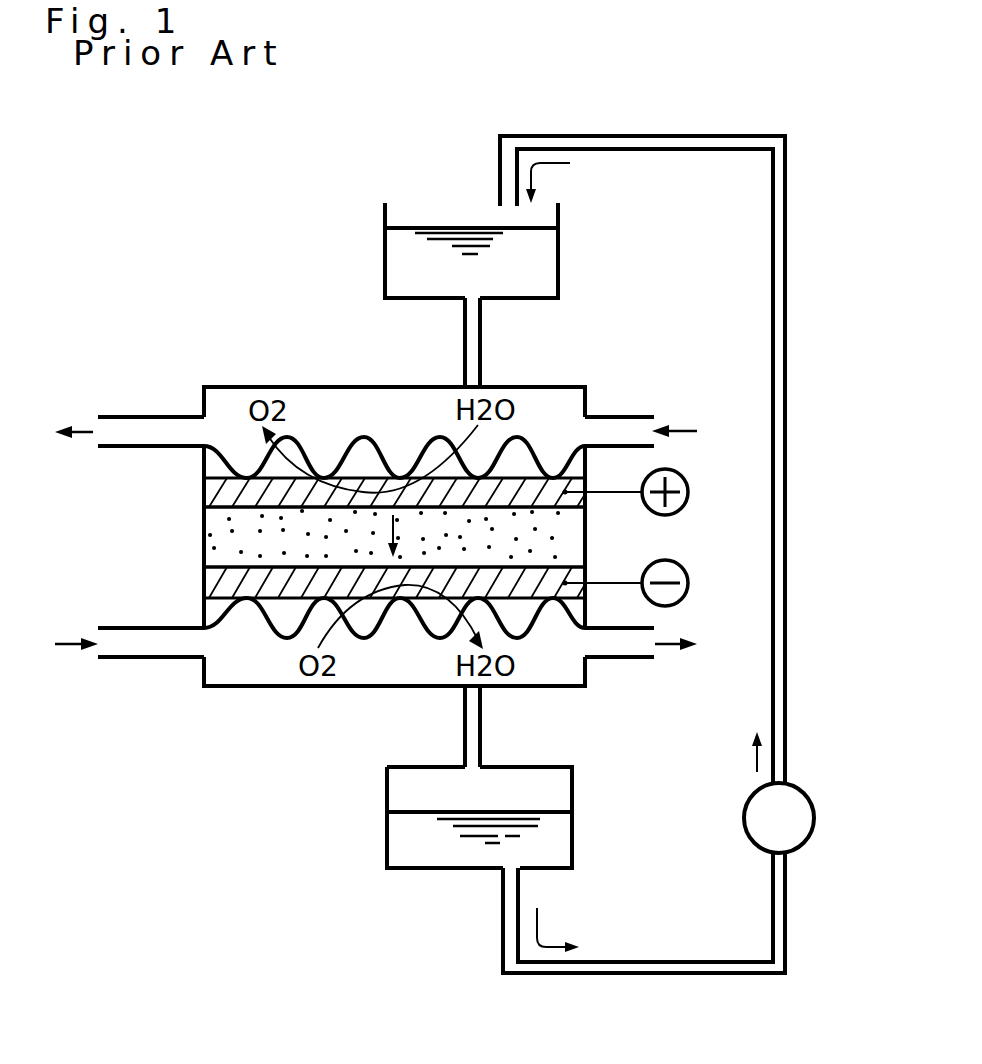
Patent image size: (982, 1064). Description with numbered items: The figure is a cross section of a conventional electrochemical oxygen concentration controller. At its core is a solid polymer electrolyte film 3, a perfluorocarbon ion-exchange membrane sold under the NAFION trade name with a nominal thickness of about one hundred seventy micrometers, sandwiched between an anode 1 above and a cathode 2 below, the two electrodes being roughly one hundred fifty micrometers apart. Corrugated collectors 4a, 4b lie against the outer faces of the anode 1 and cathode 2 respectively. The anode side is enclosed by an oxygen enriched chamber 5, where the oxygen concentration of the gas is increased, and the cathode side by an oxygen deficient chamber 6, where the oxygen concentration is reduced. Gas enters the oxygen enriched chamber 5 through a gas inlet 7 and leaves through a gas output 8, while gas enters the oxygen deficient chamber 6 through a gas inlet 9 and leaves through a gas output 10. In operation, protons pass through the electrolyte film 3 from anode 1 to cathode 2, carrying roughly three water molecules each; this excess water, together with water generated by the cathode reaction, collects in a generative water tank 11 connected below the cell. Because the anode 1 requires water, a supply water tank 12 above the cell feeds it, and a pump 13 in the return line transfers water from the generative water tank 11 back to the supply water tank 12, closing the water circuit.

The anode 1 is at (204, 493).
The cathode 2 is at (204, 586).
The solid polymer electrolyte film 3 is at (204, 541).
The collector 4a is at (305, 442).
The collector 4b is at (262, 617).
The oxygen enriched chamber 5 is at (228, 392).
The oxygen deficient chamber 6 is at (224, 678).
The gas inlet to the oxygen enriched chamber 7 is at (633, 426).
The gas output from the oxygen enriched chamber 8 is at (138, 418).
The gas inlet to the oxygen deficient chamber 9 is at (128, 652).
The gas output from the oxygen deficient chamber 10 is at (622, 653).
The generative water tank 11 is at (397, 838).
The supply water tank 12 is at (390, 272).
The pump 13 is at (757, 848).